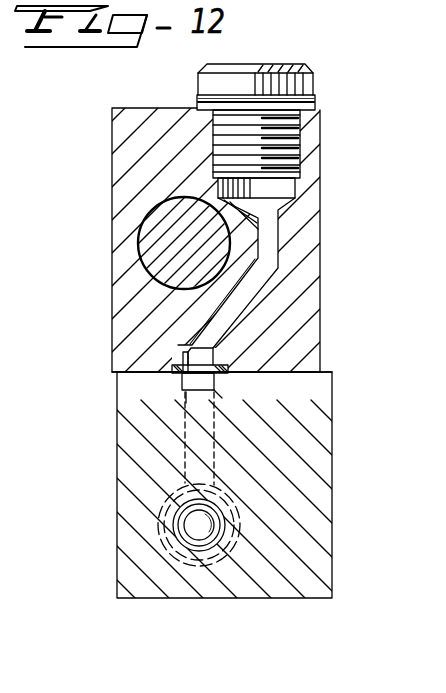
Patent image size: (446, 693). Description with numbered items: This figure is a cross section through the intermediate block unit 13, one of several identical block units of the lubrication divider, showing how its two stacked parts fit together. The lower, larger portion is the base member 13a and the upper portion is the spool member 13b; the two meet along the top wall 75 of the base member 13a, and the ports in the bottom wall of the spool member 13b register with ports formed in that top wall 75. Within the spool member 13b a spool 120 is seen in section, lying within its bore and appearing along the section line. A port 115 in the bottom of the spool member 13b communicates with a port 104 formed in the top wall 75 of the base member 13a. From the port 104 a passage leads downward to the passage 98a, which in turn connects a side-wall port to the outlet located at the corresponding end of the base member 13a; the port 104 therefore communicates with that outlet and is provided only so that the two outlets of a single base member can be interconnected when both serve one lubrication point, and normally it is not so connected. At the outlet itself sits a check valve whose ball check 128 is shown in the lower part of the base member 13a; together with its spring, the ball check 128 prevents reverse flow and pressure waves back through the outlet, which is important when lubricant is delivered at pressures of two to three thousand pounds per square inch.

The intermediate block unit 13 is at (223, 346).
The base member 13a is at (117, 447).
The spool member 13b is at (112, 248).
The spool 120 is at (149, 215).
The top wall 75 is at (275, 372).
The port 115 is at (188, 351).
The port 104 is at (184, 390).
The passage 98a is at (214, 438).
The ball check 128 is at (217, 532).